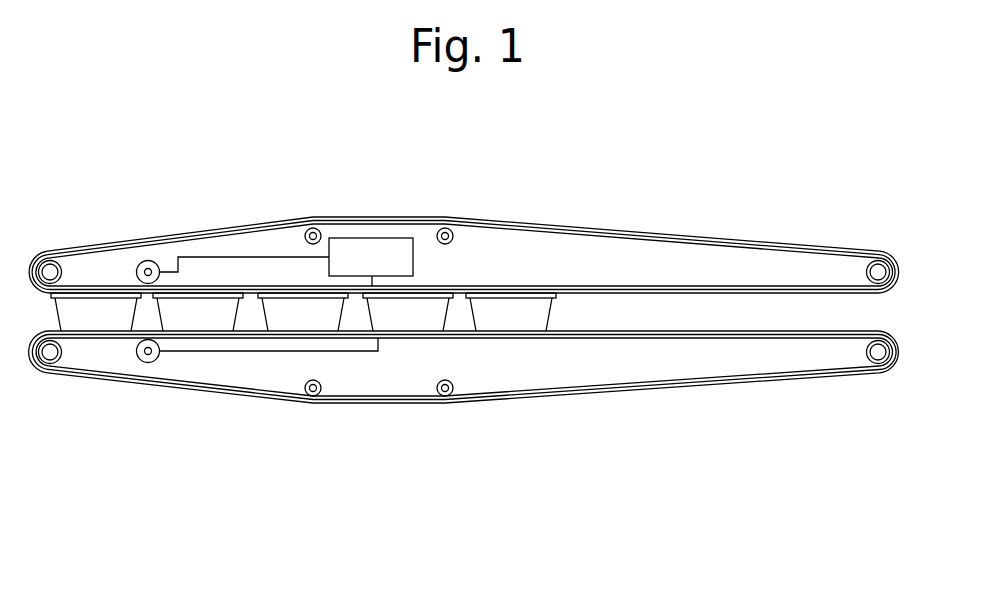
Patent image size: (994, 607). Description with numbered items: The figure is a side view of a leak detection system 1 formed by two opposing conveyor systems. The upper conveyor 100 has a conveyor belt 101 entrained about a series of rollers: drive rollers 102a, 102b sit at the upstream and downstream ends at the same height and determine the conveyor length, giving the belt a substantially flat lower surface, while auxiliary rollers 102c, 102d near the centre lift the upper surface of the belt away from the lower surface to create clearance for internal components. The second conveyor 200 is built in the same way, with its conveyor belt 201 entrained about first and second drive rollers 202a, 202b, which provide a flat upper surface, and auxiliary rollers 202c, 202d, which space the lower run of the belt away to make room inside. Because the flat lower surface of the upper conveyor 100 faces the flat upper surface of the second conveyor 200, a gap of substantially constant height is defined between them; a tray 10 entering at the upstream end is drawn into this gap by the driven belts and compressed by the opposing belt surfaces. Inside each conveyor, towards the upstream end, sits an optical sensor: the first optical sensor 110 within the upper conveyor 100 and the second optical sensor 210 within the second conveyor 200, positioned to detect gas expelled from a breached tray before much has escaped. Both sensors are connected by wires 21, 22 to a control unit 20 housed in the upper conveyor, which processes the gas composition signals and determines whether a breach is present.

The leak detection system 1 is at (592, 197).
The upper conveyor 100 is at (266, 214).
The conveyor belt 101 is at (700, 236).
The drive roller 102a is at (51, 269).
The drive roller 102b is at (877, 269).
The auxiliary roller 102c is at (317, 229).
The auxiliary roller 102d is at (456, 228).
The first optical sensor 110 is at (149, 261).
The wire 21 is at (212, 256).
The control unit 20 is at (378, 238).
The tray 10 is at (98, 313).
The second optical sensor 210 is at (154, 362).
The wire 22 is at (243, 349).
The second conveyor 200 is at (640, 394).
The conveyor belt 201 is at (760, 384).
The first drive roller 202a is at (51, 355).
The second drive roller 202b is at (879, 356).
The auxiliary roller 202c is at (320, 395).
The auxiliary roller 202d is at (455, 394).